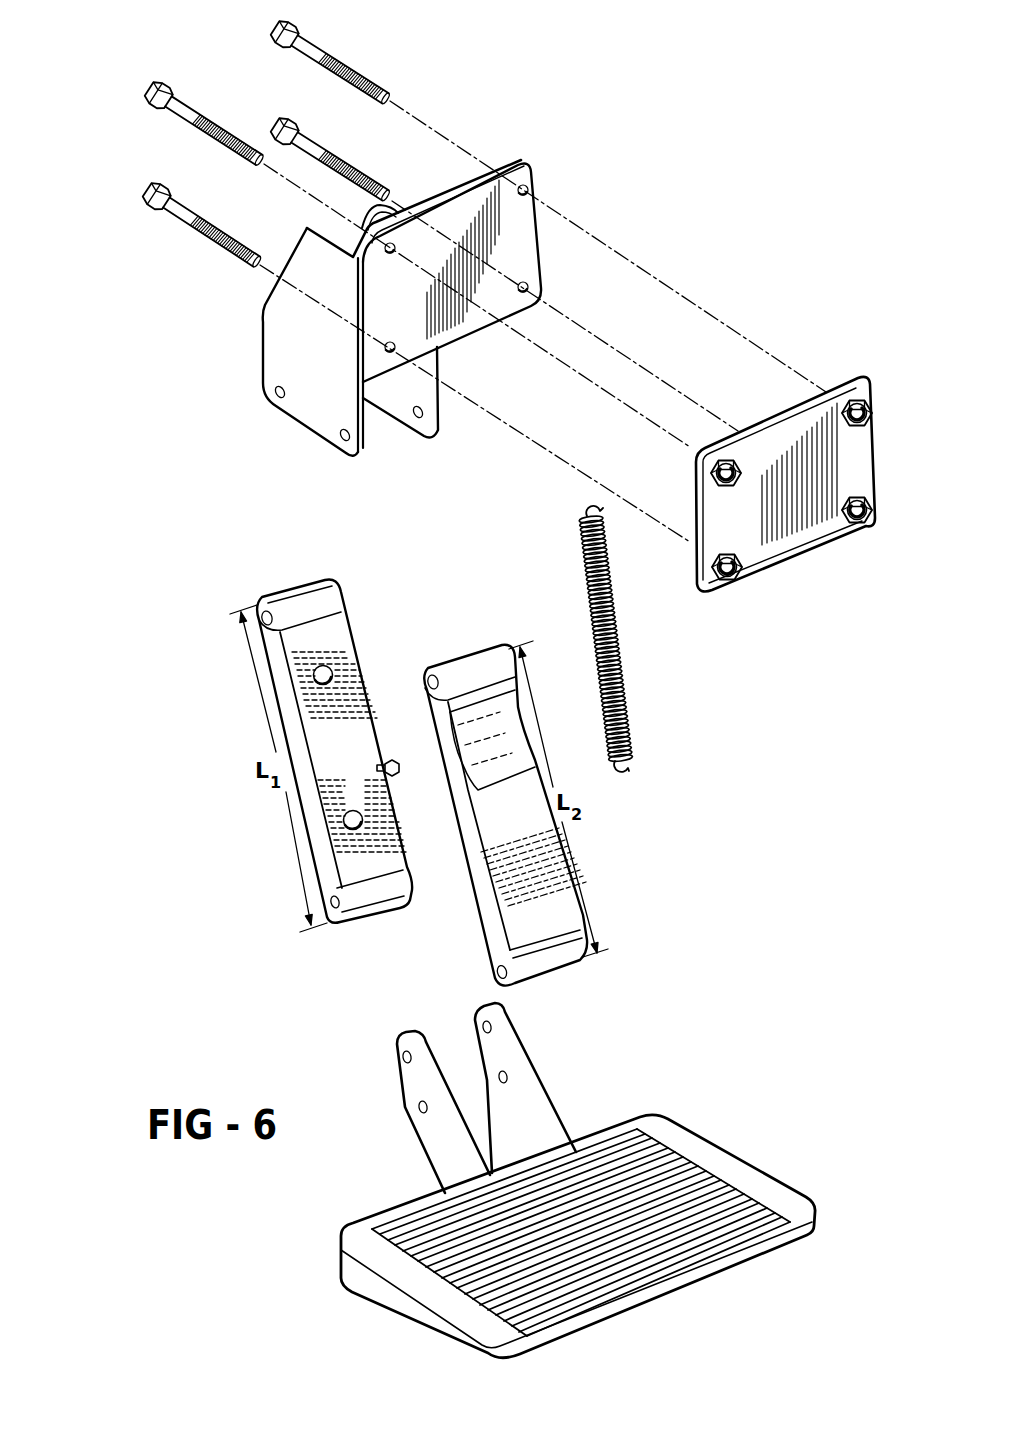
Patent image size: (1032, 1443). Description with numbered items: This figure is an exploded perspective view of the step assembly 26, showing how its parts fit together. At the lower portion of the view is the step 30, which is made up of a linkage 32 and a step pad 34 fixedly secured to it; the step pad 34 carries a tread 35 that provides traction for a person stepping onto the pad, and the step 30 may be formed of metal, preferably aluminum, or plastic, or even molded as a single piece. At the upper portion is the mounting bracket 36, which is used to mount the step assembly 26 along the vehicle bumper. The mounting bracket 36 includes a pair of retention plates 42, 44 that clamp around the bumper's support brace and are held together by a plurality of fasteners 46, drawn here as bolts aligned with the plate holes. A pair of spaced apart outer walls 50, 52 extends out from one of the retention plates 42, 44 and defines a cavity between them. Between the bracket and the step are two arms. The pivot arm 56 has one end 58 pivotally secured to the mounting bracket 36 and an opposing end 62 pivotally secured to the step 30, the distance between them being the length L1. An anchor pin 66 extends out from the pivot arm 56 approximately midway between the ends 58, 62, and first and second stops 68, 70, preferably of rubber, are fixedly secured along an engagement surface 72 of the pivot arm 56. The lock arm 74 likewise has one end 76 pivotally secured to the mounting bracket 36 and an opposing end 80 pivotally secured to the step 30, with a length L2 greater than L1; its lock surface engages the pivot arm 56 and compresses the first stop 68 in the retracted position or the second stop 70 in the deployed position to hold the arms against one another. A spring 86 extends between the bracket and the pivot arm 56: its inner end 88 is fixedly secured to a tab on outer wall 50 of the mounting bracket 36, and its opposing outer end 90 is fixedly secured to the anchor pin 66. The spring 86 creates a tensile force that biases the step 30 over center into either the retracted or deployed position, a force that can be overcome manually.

The step assembly 26 is at (70, 357).
The step 30 is at (569, 1180).
The linkage 32 is at (555, 1103).
The step pad 34 is at (735, 1150).
The tread 35 is at (487, 1263).
The mounting bracket 36 is at (348, 308).
The retention plate 42 is at (537, 200).
The retention plate 44 is at (822, 545).
The fasteners 46 is at (207, 122).
The outer wall 50 is at (355, 403).
The outer wall 52 is at (440, 410).
The pivot arm 56 is at (346, 758).
The end of pivot arm 58 is at (297, 585).
The opposing end of pivot arm 62 is at (385, 912).
The anchor pin 66 is at (391, 757).
The first stop 68 is at (327, 672).
The second stop 70 is at (362, 821).
The engagement surface 72 is at (380, 640).
The lock arm 74 is at (523, 810).
The end of lock arm 76 is at (460, 650).
The opposing end of lock arm 80 is at (550, 975).
The spring 86 is at (648, 654).
The inner end of spring 88 is at (602, 505).
The outer end of spring 90 is at (629, 777).